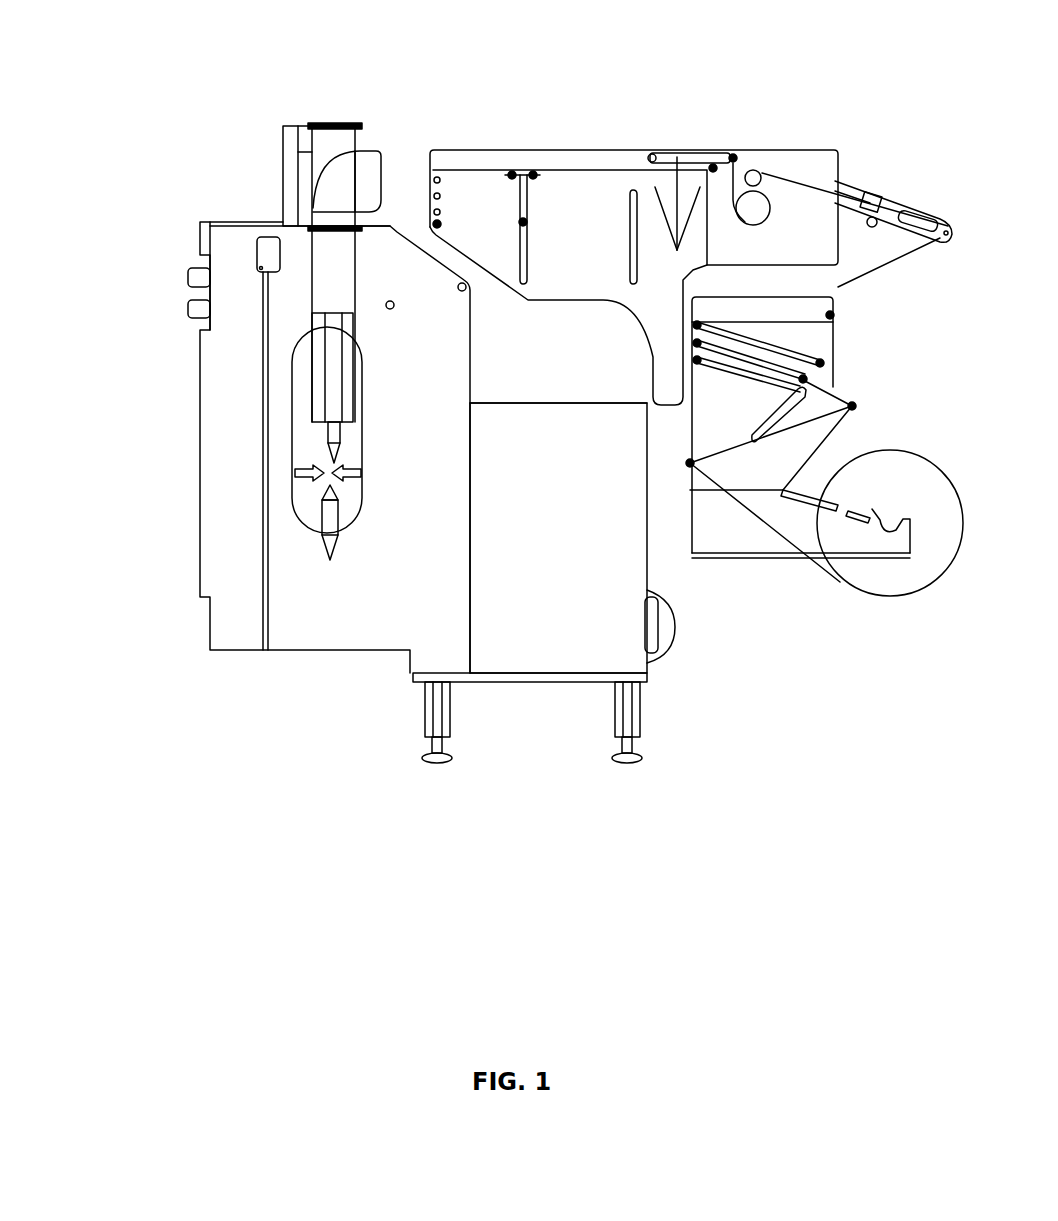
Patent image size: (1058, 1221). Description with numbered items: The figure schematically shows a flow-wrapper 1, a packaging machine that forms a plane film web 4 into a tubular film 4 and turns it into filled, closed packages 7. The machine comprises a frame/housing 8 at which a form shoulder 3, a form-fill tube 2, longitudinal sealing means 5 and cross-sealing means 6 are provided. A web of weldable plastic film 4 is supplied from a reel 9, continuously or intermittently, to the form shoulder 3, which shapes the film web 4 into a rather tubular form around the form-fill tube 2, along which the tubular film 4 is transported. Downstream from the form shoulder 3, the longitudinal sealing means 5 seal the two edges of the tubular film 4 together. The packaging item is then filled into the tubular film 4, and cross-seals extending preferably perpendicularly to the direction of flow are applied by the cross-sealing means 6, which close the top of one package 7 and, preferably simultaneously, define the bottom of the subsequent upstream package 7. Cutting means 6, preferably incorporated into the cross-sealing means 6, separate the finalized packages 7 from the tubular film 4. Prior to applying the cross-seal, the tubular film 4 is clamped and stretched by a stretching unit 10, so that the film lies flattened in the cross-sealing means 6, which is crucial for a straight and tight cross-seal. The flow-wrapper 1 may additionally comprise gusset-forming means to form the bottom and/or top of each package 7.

The flow-wrapper 1 is at (585, 101).
The form-fill tube 2 is at (325, 126).
The form shoulder 3 is at (343, 187).
The film web 4 is at (392, 188).
The longitudinal sealing means 5 is at (333, 372).
The cross-sealing means 6 is at (318, 470).
The package 7 is at (328, 535).
The frame/housing 8 is at (505, 640).
The reel 9 is at (870, 573).
The stretching unit 10 is at (318, 470).